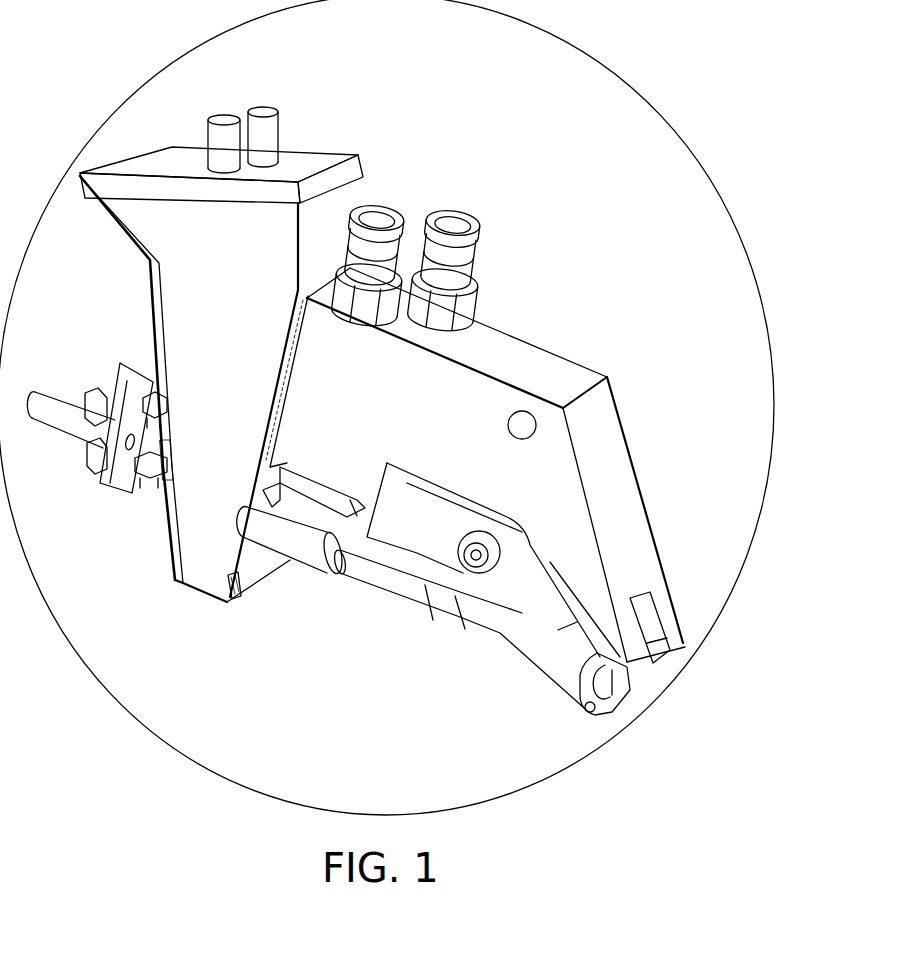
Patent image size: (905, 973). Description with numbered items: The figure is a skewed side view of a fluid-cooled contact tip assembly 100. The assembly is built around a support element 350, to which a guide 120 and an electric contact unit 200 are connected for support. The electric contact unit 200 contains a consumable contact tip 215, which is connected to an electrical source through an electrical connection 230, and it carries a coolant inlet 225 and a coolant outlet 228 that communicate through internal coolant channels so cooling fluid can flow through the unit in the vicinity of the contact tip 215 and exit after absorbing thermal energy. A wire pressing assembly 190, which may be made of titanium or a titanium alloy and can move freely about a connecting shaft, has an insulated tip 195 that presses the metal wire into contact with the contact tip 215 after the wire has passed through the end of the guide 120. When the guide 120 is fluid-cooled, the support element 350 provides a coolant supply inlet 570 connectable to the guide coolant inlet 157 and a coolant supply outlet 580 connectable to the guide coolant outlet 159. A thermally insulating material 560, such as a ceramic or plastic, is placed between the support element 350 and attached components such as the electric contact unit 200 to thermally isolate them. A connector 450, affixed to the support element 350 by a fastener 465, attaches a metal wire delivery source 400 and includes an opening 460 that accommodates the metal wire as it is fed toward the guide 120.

The fluid-cooled contact tip assembly 100 is at (660, 113).
The guide 120 is at (443, 562).
The guide coolant inlet 157 is at (307, 540).
The guide coolant outlet 159 is at (305, 483).
The wire pressing assembly 190 is at (400, 540).
The insulated tip 195 is at (583, 707).
The electric contact unit 200 is at (527, 362).
The contact tip 215 is at (662, 657).
The coolant inlet 225 is at (380, 219).
The coolant outlet 228 is at (470, 224).
The electrical connection 230 is at (522, 425).
The support element 350 is at (178, 242).
The metal wire delivery source 400 is at (73, 427).
The connector 450 is at (125, 384).
The opening 460 is at (153, 447).
The fastener 465 is at (156, 473).
The thermally insulating material 560 is at (293, 337).
The coolant supply inlet 570 is at (220, 133).
The coolant supply outlet 580 is at (272, 135).